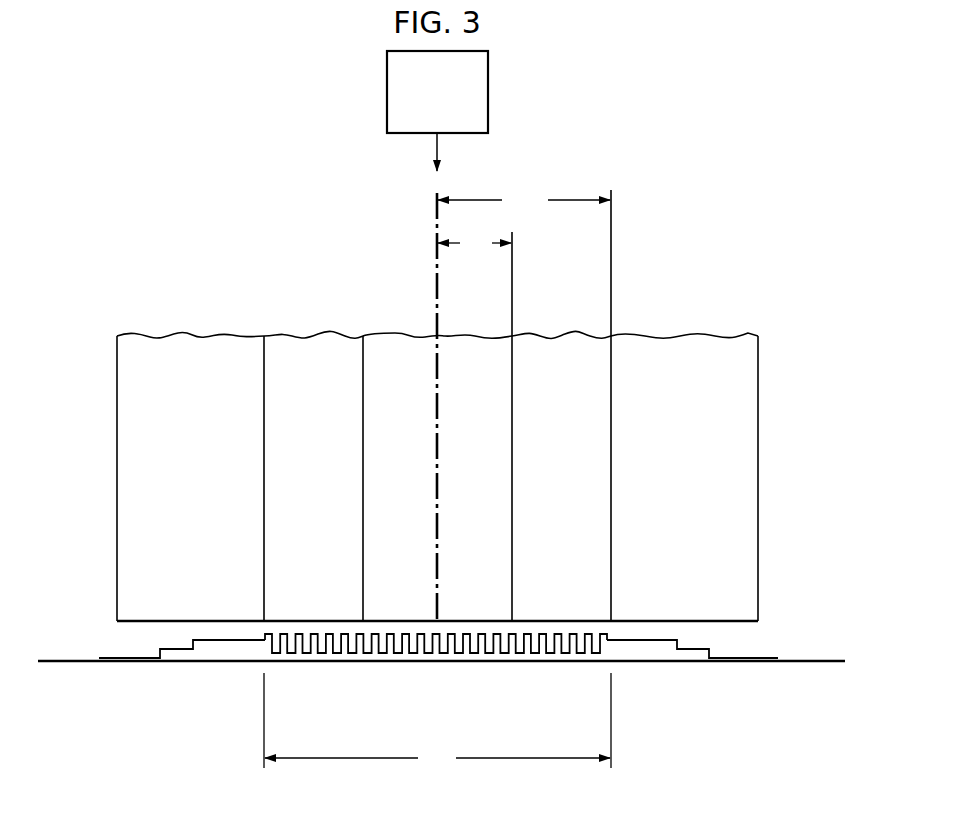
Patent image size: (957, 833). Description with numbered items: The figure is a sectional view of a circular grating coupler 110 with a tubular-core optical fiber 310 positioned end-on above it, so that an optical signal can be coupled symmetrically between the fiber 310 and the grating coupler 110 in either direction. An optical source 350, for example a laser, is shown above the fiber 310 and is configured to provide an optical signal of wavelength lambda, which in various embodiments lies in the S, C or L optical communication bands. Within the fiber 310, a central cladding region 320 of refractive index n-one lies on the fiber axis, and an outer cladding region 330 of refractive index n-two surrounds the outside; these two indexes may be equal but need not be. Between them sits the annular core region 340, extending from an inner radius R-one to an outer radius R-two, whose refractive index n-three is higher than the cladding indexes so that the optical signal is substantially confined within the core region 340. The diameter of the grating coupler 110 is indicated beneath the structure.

The optical source 350 is at (387, 92).
The optical fiber 310 is at (437, 386).
The central cladding region 320 is at (396, 334).
The outer cladding region 330 is at (181, 334).
The core region 340 is at (314, 334).
The circular grating coupler 110 is at (463, 685).